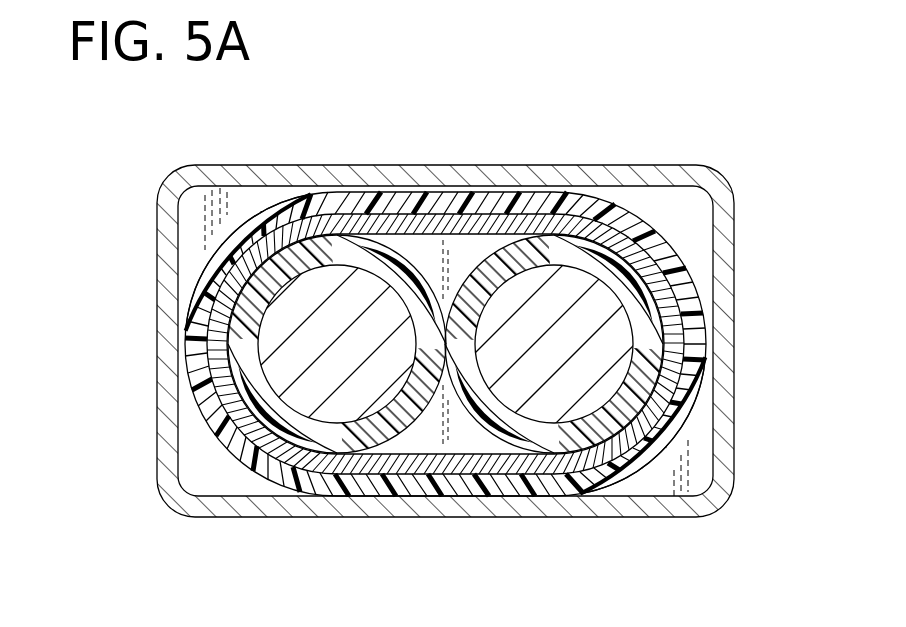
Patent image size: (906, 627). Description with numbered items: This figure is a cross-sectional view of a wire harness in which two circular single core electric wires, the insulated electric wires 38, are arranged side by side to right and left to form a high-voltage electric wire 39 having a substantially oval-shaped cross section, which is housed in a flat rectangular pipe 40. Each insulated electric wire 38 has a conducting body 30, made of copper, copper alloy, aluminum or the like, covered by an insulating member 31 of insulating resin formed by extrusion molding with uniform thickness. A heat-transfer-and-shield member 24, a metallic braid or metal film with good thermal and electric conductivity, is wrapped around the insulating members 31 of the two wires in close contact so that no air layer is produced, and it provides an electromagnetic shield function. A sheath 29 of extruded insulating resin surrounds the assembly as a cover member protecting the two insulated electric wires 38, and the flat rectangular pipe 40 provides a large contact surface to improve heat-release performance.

The flat rectangular pipe 40 is at (396, 175).
The high-voltage electric wire 39 is at (432, 350).
The sheath 29 is at (455, 483).
The heat-transfer-and-shield member 24 is at (532, 463).
The insulated electric wire 38 is at (432, 420).
The conducting body 30 is at (359, 392).
The insulating member 31 is at (293, 428).